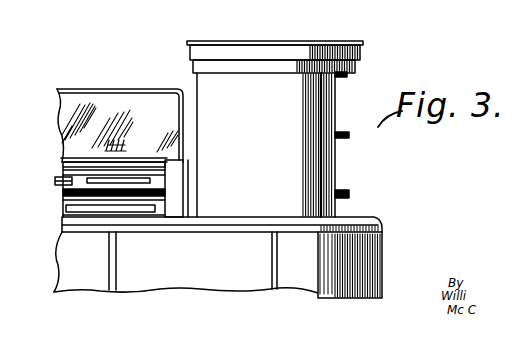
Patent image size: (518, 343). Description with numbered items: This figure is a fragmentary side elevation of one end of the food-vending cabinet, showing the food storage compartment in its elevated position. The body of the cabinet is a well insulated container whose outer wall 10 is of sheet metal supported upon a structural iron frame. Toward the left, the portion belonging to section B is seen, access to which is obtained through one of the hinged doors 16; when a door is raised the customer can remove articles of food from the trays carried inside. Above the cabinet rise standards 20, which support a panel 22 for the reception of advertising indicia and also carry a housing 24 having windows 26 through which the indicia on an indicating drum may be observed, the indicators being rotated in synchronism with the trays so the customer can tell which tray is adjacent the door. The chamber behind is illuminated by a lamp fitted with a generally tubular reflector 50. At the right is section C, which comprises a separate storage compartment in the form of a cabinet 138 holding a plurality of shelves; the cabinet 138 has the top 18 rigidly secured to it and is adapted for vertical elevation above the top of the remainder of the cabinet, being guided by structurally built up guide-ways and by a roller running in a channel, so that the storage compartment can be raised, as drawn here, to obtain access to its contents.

The outer wall 10 is at (223, 280).
The hinged door 16 is at (62, 216).
The top 18 is at (282, 45).
The standard 20 is at (178, 178).
The panel 22 is at (135, 104).
The housing 24 is at (128, 176).
The window 26 is at (170, 181).
The reflector 50 is at (117, 154).
The cabinet 138 is at (323, 108).
The section B is at (91, 285).
The section C is at (352, 206).